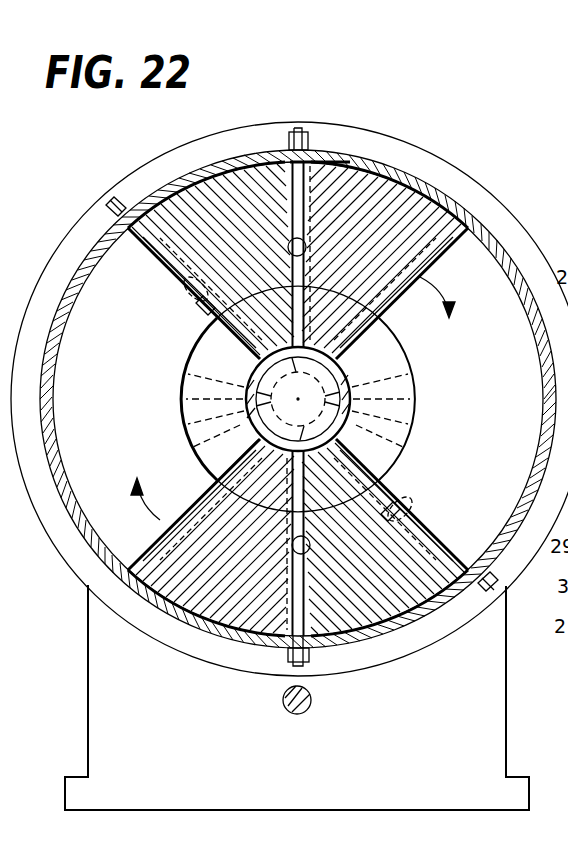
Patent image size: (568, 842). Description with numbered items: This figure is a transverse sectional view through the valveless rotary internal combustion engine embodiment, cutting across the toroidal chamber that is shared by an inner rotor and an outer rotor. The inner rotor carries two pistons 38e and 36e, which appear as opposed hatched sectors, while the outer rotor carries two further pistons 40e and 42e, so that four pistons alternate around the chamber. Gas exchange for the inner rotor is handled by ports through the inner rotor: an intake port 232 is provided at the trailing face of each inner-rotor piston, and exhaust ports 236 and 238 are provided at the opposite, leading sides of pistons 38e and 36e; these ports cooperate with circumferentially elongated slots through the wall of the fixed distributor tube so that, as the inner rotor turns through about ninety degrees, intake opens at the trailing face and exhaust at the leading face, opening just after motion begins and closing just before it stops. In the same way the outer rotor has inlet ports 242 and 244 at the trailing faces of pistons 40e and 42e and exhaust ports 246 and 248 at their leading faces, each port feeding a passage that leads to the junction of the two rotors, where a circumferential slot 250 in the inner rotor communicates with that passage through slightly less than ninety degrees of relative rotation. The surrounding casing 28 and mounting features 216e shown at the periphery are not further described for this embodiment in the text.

The outer casing 28 is at (289, 399).
The piston 40e is at (200, 178).
The piston 38e is at (395, 182).
The piston 36e is at (209, 598).
The piston 42e is at (372, 624).
The mounting brackets 216e is at (305, 131).
The intake port 232 is at (238, 375).
The exhaust port 236 is at (360, 360).
The exhaust port 238 is at (240, 432).
The circumferential slot 250 is at (255, 446).
The inlet port 242 is at (192, 298).
The exhaust port 246 is at (212, 305).
The inlet port 244 is at (395, 483).
The exhaust port 248 is at (310, 546).